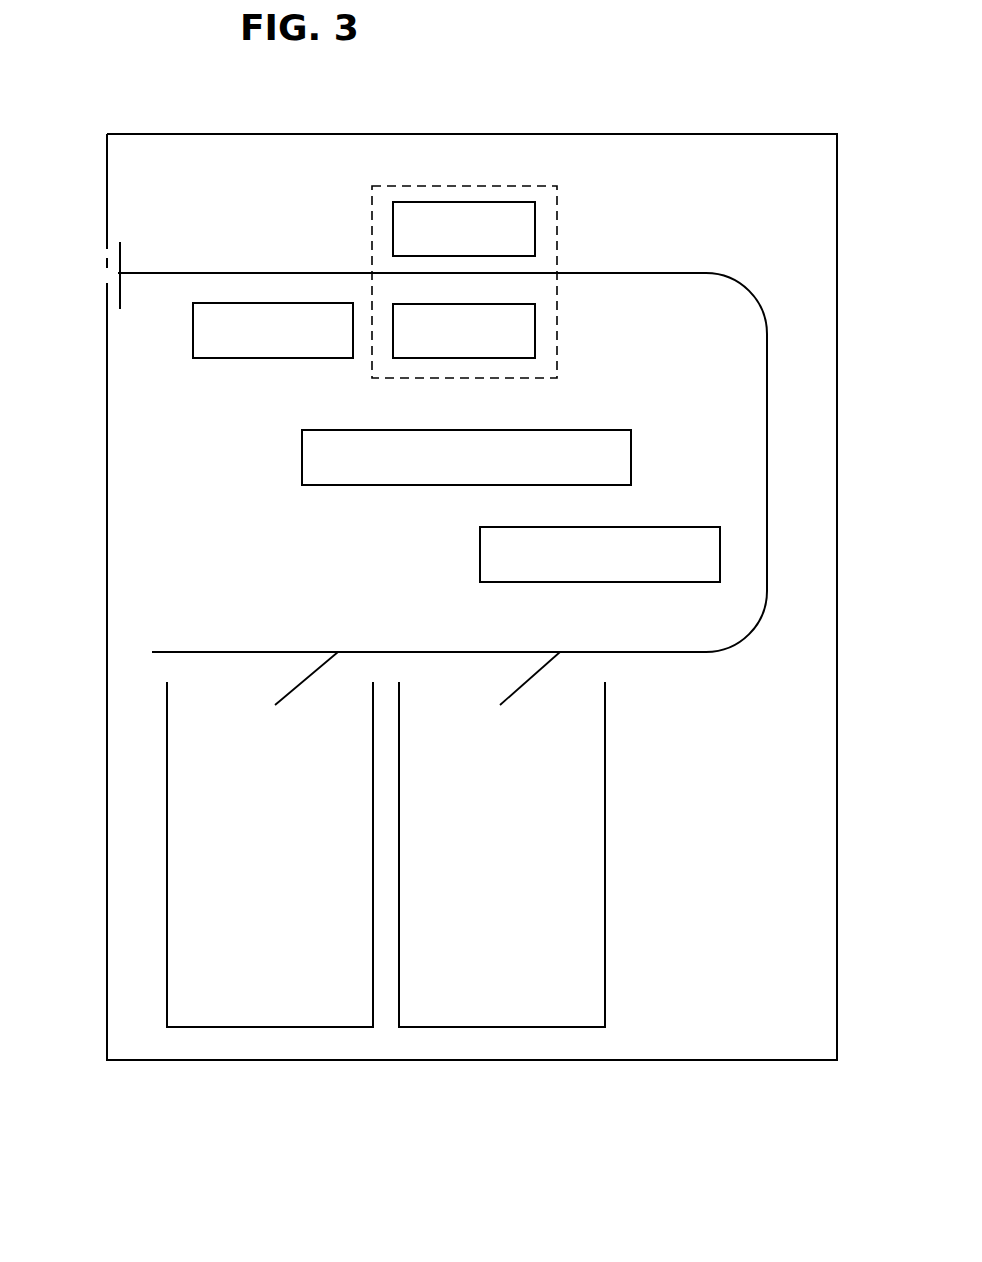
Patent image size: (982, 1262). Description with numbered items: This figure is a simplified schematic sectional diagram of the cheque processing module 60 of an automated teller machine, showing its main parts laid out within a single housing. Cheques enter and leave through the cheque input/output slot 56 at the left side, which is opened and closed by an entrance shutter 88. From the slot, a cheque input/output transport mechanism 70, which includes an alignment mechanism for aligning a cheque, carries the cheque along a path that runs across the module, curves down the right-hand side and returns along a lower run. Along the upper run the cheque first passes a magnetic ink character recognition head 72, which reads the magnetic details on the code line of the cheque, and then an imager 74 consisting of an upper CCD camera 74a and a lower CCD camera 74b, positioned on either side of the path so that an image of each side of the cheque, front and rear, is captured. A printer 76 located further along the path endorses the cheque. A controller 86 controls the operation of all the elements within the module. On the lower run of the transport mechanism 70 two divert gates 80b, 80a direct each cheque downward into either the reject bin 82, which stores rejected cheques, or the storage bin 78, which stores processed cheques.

The cheque processing module 60 is at (717, 134).
The cheque input/output transport mechanism 70 is at (273, 273).
The entrance shutter 88 is at (118, 249).
The cheque input/output slot 56 is at (107, 273).
The magnetic ink character recognition head 72 is at (211, 360).
The imager 74 is at (468, 186).
The upper CCD camera 74a is at (535, 228).
The lower CCD camera 74b is at (535, 330).
The controller 86 is at (302, 460).
The printer 76 is at (682, 527).
The divert gate 80b is at (337, 650).
The divert gate 80a is at (558, 650).
The reject bin 82 is at (267, 1027).
The storage bin 78 is at (505, 1027).